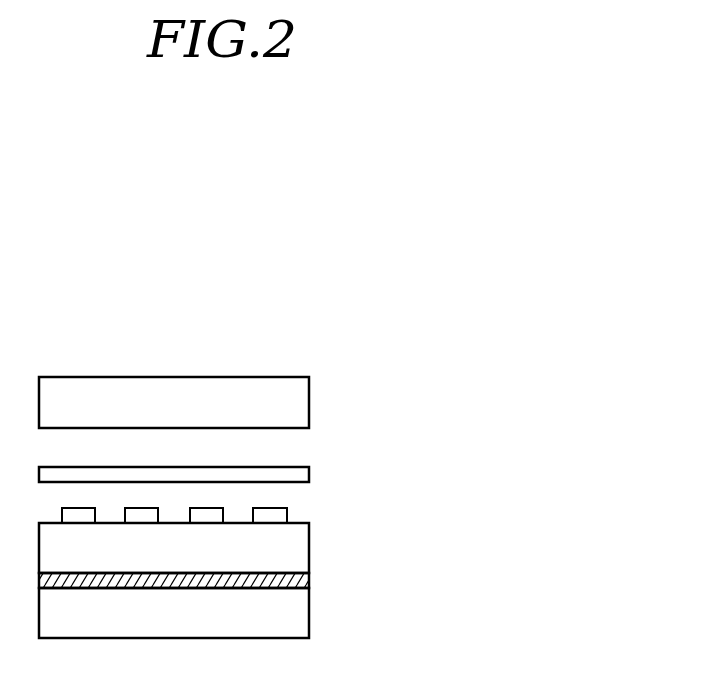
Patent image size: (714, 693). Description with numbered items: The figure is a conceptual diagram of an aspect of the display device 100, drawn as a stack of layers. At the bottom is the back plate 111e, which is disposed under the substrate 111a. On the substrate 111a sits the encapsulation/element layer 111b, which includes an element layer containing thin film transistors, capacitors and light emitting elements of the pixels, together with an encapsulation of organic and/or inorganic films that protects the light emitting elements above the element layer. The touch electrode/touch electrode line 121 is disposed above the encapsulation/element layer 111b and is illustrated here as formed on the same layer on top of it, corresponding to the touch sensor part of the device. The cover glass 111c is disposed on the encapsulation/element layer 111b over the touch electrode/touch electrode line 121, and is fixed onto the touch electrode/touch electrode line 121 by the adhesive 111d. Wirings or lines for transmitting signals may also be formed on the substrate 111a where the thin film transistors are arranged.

The display device 100 is at (352, 320).
The cover glass 111c is at (310, 402).
The adhesive 111d is at (310, 475).
The touch electrode/touch electrode line 121 is at (288, 512).
The encapsulation/element layer 111b is at (310, 547).
The substrate 111a is at (310, 580).
The back plate 111e is at (310, 612).